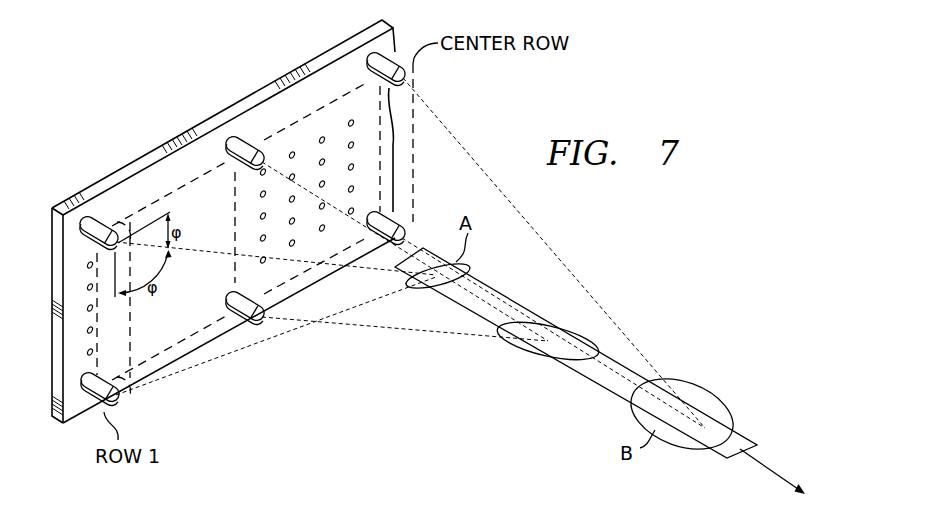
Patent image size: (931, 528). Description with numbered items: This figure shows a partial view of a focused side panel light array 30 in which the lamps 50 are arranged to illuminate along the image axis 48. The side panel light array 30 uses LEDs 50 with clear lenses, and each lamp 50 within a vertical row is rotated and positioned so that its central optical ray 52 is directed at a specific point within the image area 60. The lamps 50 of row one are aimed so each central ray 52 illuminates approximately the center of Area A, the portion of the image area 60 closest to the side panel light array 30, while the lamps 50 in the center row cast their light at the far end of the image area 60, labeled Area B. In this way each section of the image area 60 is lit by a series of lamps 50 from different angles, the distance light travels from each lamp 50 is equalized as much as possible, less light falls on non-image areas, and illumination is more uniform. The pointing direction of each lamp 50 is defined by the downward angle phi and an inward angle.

The side panel light array 30 is at (96, 146).
The lamp 50 is at (237, 137).
The central optical ray 52 is at (232, 357).
The image area 60 is at (743, 429).
The image axis 48 is at (777, 467).